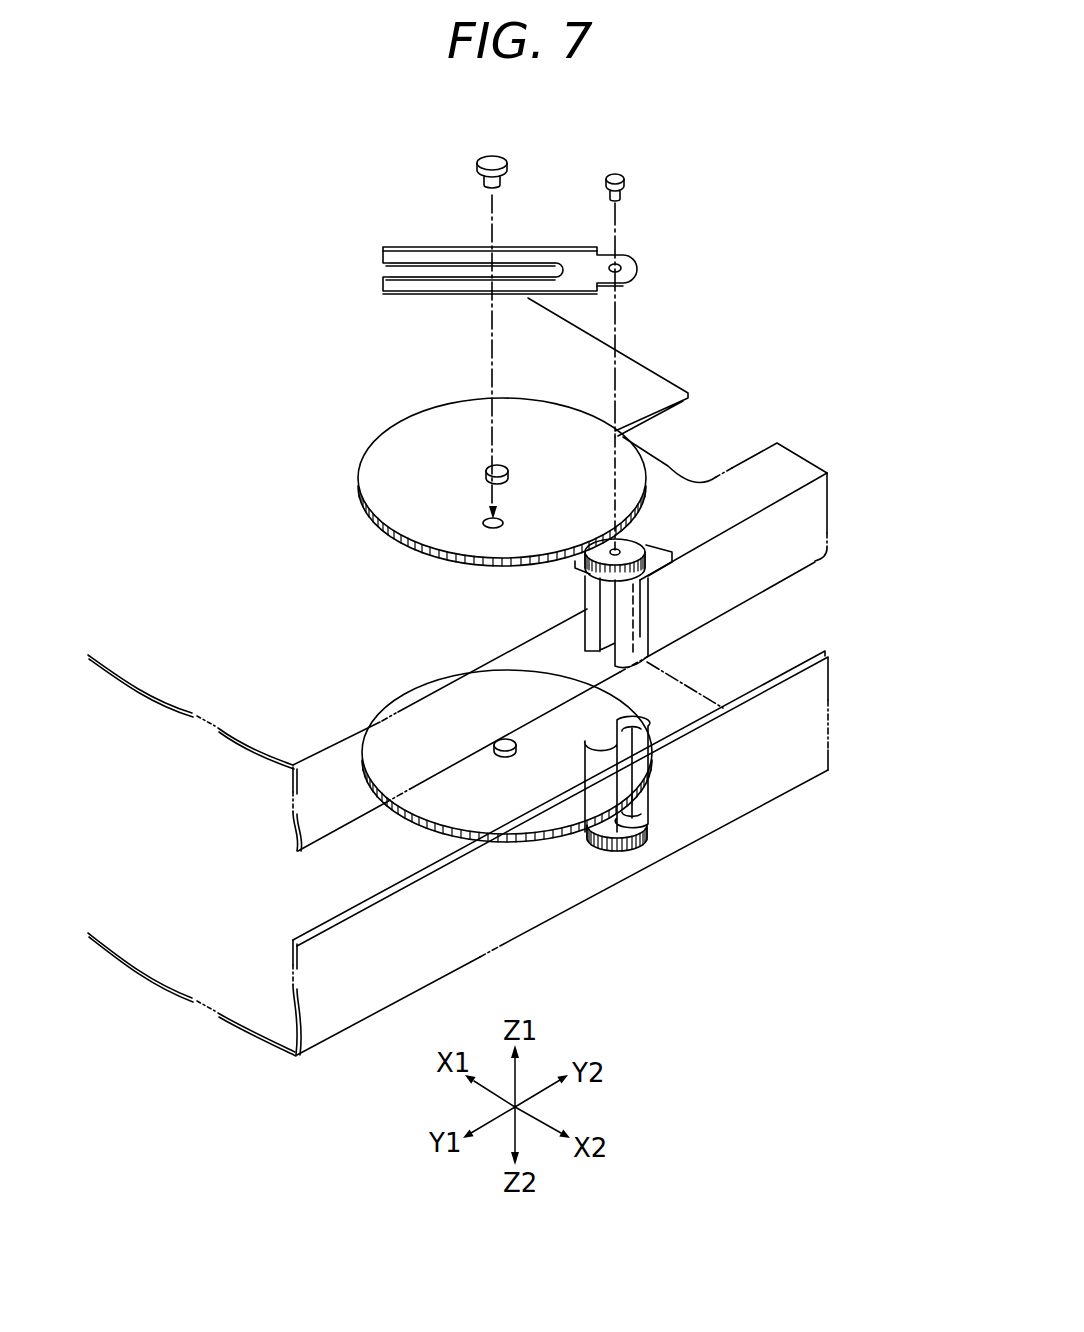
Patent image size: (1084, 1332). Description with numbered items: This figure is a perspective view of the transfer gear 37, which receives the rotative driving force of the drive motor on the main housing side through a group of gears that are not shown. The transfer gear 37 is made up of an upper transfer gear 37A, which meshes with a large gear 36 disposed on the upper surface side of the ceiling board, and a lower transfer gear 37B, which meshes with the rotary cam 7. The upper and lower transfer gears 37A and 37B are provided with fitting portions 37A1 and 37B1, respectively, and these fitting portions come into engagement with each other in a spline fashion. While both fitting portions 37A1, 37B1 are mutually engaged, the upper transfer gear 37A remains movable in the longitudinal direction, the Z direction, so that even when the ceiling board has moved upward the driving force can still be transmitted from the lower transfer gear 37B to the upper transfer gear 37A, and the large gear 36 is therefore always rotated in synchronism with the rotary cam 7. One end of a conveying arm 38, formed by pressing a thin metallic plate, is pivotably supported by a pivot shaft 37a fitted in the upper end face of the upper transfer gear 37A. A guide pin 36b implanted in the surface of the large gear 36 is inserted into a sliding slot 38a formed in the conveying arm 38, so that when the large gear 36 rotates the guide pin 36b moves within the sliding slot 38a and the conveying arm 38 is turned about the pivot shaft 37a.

The rotary cam 7 is at (456, 803).
The large gear 36 is at (398, 430).
The guide pin 36b is at (507, 160).
The transfer gear 37 is at (706, 720).
The upper transfer gear 37A is at (682, 603).
The fitting portion 37A1 is at (597, 632).
The lower transfer gear 37B is at (715, 784).
The fitting portion 37B1 is at (617, 802).
The pivot shaft 37a is at (618, 176).
The conveying arm 38 is at (408, 250).
The sliding slot 38a is at (454, 274).